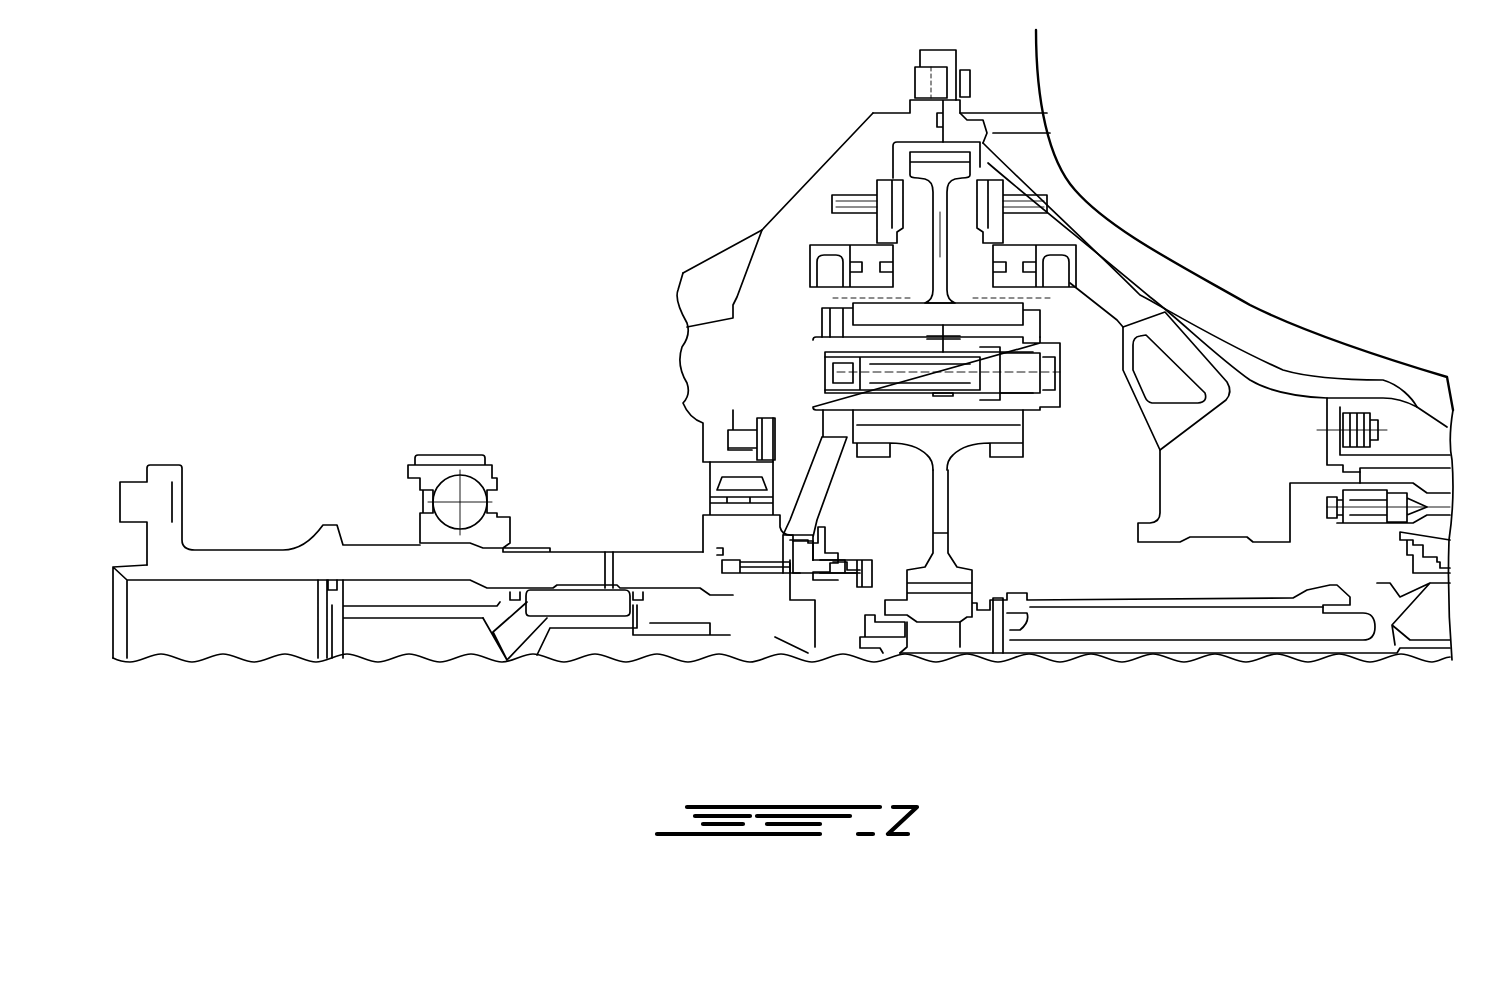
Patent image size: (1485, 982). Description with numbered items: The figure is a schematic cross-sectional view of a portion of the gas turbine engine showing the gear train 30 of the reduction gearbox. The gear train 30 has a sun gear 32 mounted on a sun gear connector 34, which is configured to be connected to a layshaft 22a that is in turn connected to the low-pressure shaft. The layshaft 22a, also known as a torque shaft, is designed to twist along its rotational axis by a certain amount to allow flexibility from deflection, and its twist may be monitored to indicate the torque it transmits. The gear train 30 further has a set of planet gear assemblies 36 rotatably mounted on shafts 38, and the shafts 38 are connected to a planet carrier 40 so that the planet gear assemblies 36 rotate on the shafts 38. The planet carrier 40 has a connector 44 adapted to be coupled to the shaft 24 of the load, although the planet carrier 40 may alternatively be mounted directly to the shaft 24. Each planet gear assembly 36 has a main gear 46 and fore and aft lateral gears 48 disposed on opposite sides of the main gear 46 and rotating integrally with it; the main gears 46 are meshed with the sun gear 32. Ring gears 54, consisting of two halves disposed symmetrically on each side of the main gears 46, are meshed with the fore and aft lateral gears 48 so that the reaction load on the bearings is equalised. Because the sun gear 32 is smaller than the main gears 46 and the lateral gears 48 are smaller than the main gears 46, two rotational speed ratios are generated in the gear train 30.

The layshaft 22a is at (1147, 643).
The shaft 24 is at (423, 563).
The gear train 30 is at (890, 518).
The sun gear 32 is at (947, 603).
The sun gear connector 34 is at (972, 634).
The planet gear assemblies 36 is at (965, 433).
The shafts 38 is at (1027, 383).
The planet carrier 40 is at (833, 447).
The connector 44 is at (763, 573).
The main gear 46 is at (927, 167).
The fore and aft lateral gears 48 is at (872, 298).
The ring gears 54 is at (870, 292).